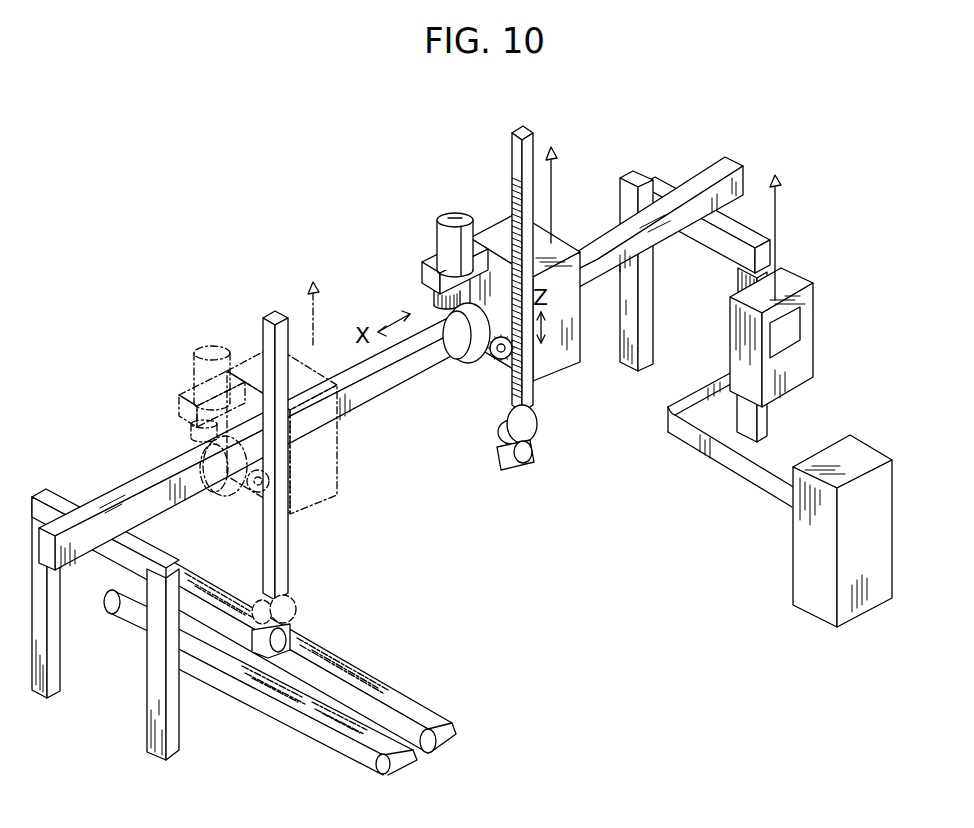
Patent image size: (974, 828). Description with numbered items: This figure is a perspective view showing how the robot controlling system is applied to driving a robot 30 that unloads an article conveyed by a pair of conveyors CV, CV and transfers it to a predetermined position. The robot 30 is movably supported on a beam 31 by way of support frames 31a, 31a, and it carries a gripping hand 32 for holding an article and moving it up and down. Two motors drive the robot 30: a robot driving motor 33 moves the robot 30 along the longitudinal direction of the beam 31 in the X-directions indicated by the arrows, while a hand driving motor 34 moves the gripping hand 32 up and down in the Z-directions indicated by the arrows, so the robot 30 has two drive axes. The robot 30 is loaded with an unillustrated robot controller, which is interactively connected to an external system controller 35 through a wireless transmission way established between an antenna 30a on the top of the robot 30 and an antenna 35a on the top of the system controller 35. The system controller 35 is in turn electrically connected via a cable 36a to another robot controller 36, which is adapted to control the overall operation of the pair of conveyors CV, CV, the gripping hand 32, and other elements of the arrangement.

The robot 30 is at (553, 368).
The antenna 30a is at (557, 187).
The beam 31 is at (383, 388).
The support frames 31a is at (55, 637).
The gripping hand 32 is at (533, 458).
The robot driving motor 33 is at (452, 222).
The hand driving motor 34 is at (467, 362).
The system controller 35 is at (797, 380).
The antenna 35a is at (782, 210).
The robot controller 36 is at (877, 555).
The cable 36a is at (732, 462).
The conveyors CV is at (320, 703).